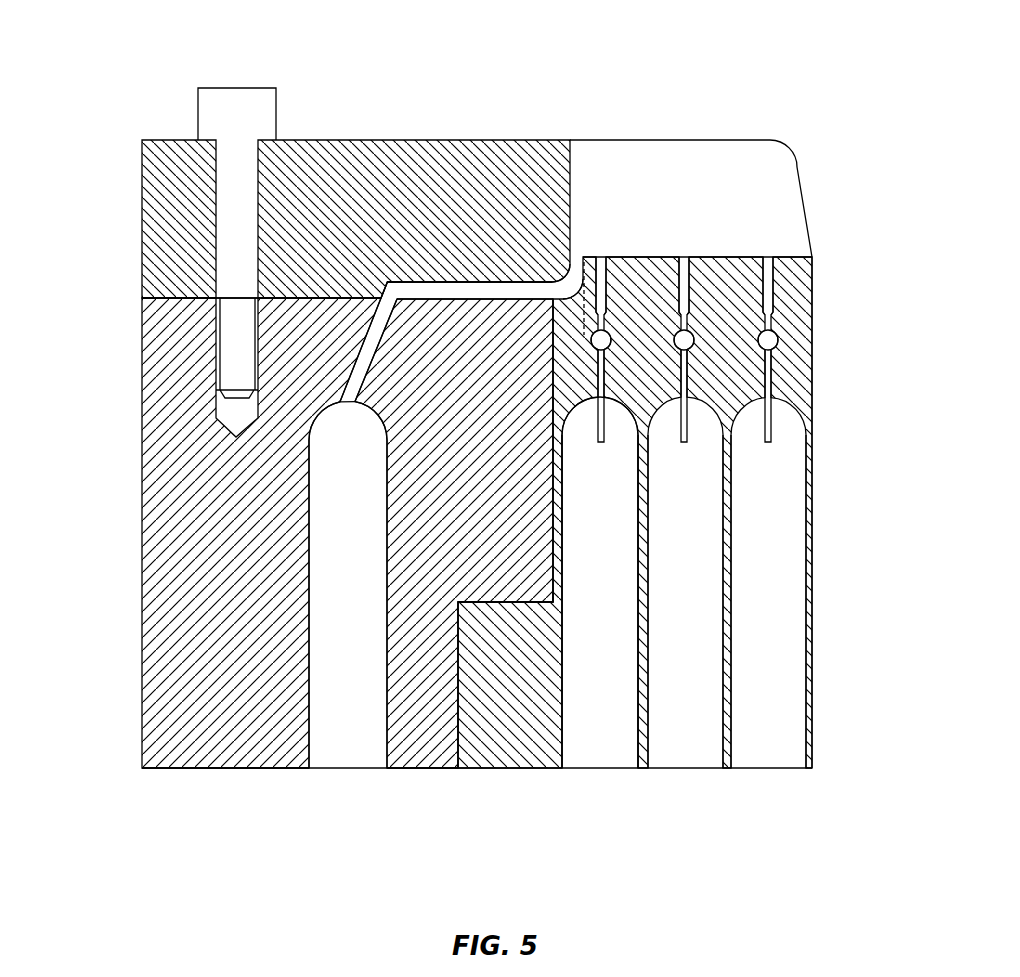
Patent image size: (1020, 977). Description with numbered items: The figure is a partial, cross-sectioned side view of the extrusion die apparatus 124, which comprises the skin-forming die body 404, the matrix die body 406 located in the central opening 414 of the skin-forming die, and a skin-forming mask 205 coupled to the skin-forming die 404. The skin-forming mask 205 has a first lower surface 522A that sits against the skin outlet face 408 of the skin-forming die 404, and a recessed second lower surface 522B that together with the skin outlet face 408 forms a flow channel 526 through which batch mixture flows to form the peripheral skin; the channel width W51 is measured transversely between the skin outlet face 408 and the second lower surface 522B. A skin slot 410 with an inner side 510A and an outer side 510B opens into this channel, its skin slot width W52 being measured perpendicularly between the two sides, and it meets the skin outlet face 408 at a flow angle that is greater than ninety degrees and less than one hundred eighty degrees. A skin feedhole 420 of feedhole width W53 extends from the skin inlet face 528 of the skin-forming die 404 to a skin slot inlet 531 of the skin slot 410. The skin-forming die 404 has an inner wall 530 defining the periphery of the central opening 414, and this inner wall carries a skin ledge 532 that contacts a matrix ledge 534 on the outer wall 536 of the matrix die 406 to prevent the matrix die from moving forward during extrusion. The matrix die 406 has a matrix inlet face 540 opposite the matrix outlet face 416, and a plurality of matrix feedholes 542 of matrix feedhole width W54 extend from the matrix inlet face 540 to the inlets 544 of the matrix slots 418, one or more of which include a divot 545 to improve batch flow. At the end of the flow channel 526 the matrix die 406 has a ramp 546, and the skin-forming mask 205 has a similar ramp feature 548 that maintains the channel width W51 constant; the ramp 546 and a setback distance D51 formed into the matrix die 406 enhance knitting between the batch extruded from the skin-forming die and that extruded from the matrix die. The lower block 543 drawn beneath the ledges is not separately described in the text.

The extrusion die apparatus 124 is at (552, 82).
The skin-forming mask 205 is at (378, 134).
The skin-forming die body 404 is at (138, 471).
The matrix die body 406 is at (818, 487).
The skin outlet face 408 is at (165, 295).
The skin slot 410 is at (346, 378).
The central opening 414 is at (560, 556).
The matrix outlet face 416 is at (796, 252).
The matrix slots 418 is at (685, 256).
The skin feedhole 420 is at (318, 716).
The inner side 510A is at (370, 393).
The outer side 510B is at (363, 344).
The first lower surface 522A is at (187, 300).
The second lower surface 522B is at (541, 282).
The flow channel 526 is at (389, 279).
The skin inlet face 528 is at (244, 772).
The inner wall 530 is at (556, 494).
The skin slot inlet 531 is at (348, 405).
The skin ledge 532 is at (521, 612).
The matrix ledge 534 is at (556, 598).
The outer wall 536 is at (455, 736).
The matrix inlet face 540 is at (801, 772).
The matrix feedholes 542 is at (806, 737).
The lower block 543 is at (525, 770).
The inlets 544 is at (605, 424).
The divot 545 is at (775, 337).
The ramp 546 is at (583, 286).
The ramp feature 548 is at (572, 268).
The channel width W51 is at (499, 362).
The skin slot width W52 is at (343, 387).
The feedhole width W53 is at (387, 557).
The matrix feedhole width W54 is at (731, 712).
The setback distance D51 is at (584, 322).